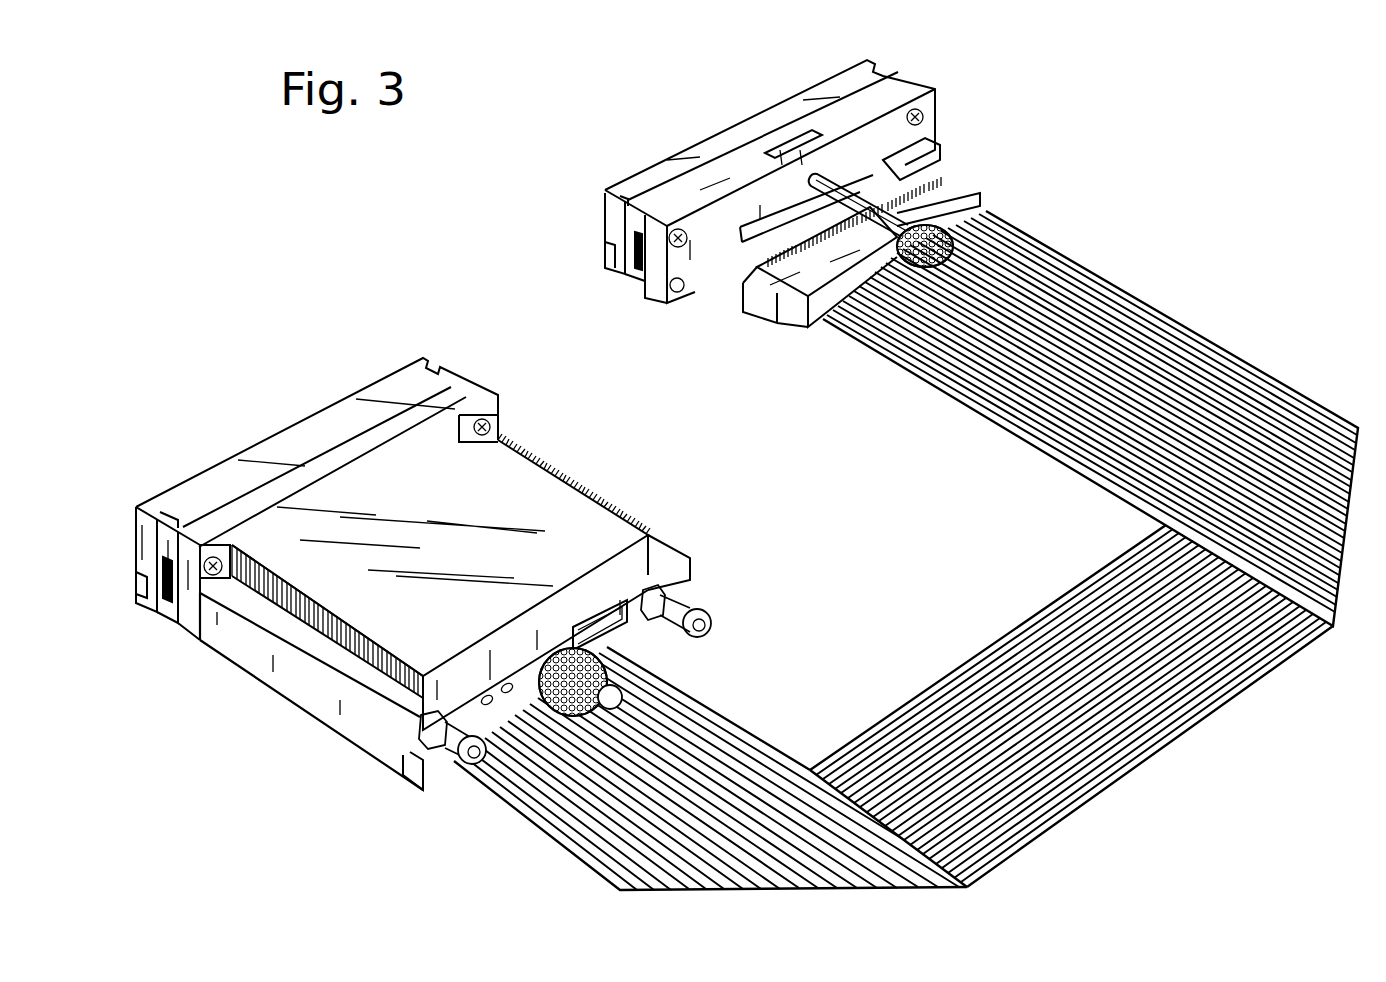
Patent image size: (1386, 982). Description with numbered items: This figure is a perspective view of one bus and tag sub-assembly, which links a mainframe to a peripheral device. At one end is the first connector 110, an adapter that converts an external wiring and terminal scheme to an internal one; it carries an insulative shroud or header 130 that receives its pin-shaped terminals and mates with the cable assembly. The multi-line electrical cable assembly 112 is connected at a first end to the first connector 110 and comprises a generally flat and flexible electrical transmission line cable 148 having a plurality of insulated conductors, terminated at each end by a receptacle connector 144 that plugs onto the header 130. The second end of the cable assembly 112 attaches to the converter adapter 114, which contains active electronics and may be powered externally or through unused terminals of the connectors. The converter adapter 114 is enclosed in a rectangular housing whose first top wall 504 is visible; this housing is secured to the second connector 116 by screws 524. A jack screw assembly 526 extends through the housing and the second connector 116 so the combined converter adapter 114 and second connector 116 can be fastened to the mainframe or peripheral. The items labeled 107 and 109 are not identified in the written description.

The first connector 110 is at (693, 88).
The insulative shroud or header 130 is at (935, 150).
The connector 144 is at (988, 200).
The electrical transmission line cable 148 is at (1125, 293).
The multi-line electrical cable assembly 112 is at (1031, 498).
The second connector 116 is at (286, 388).
The first top wall 504 is at (445, 488).
The screws 524 is at (222, 578).
The converter adapter 114 is at (306, 777).
The first jack screw 107 is at (692, 612).
The jack screw assembly 526 is at (622, 672).
The second jack screw 109 is at (453, 787).